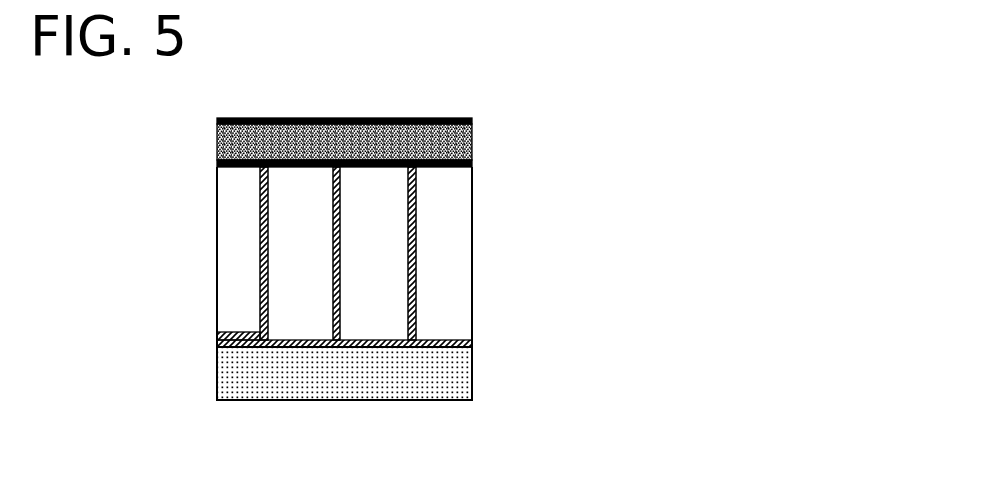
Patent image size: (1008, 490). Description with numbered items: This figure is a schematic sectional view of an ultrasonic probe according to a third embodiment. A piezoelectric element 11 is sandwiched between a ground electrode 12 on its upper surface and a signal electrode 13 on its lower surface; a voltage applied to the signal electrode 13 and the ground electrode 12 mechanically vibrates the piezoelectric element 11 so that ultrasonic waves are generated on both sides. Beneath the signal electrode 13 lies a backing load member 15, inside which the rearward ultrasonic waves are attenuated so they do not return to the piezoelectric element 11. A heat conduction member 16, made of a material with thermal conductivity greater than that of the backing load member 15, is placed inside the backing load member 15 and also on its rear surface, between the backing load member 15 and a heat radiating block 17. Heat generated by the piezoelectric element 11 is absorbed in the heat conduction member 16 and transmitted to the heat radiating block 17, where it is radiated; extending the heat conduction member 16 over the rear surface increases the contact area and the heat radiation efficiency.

The piezoelectric element 11 is at (423, 143).
The ground electrode 12 is at (416, 119).
The signal electrode 13 is at (438, 169).
The backing load member 15 is at (440, 298).
The heat conduction member 16 is at (417, 225).
The heat radiating block 17 is at (440, 373).